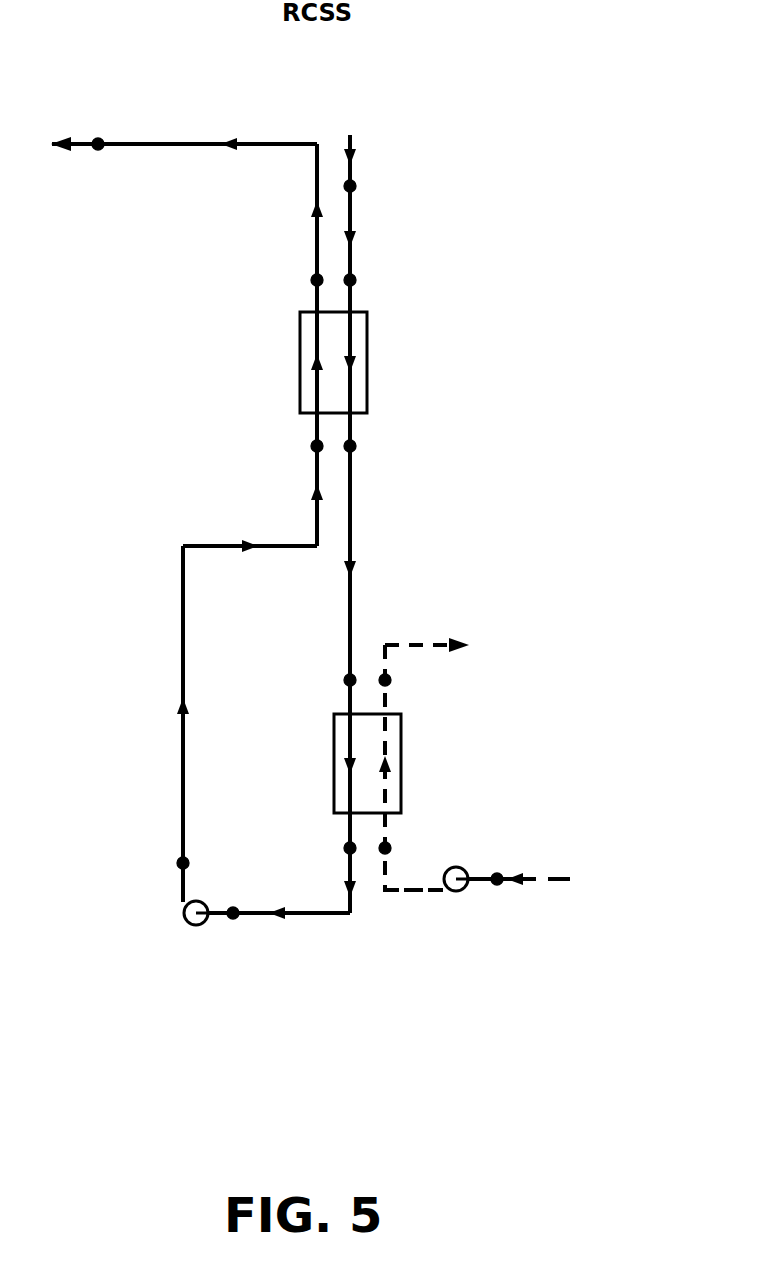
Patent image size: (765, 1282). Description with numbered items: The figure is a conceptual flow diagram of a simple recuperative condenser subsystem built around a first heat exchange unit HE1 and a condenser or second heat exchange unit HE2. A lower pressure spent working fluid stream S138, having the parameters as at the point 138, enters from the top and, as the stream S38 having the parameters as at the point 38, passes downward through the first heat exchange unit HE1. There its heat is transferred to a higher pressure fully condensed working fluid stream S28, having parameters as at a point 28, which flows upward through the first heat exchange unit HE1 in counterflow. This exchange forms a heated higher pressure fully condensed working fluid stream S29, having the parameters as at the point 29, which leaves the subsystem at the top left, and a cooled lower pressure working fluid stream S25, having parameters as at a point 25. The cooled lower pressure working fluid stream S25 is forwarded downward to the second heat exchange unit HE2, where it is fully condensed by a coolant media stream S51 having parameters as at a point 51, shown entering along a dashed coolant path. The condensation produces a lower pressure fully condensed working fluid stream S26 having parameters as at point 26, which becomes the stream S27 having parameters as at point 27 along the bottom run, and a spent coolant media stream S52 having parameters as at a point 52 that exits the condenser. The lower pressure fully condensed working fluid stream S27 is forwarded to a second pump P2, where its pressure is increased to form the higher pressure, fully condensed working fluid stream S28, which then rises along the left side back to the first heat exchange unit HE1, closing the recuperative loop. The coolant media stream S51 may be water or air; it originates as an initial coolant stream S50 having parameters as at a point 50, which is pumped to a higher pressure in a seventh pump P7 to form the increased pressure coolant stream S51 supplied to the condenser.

The point 29 is at (204, 202).
The point 138 is at (374, 187).
The point 38 is at (367, 281).
The point 28 is at (235, 655).
The point 25 is at (352, 564).
The point 52 is at (400, 681).
The point 26 is at (335, 849).
The point 51 is at (400, 849).
The point 50 is at (499, 896).
The point 27 is at (236, 934).
The first heat exchange unit HE1 is at (359, 362).
The second heat exchange unit HE2 is at (392, 763).
The second pump P2 is at (177, 913).
The seven pump P7 is at (455, 865).
The heated higher pressure fully condensed working fluid stream S29 is at (150, 146).
The lower pressure spent working fluid stream S138 is at (352, 207).
The lower pressure spent working fluid stream S38 is at (357, 296).
The higher pressure fully condensed working fluid stream S28 is at (310, 430).
The cooled lower pressure working fluid stream S25 is at (357, 430).
The spent coolant media stream S52 is at (427, 645).
The lower pressure fully condensed working fluid stream S26 is at (348, 830).
The lower pressure fully condensed working fluid stream S27 is at (218, 918).
The initial coolant stream S50 is at (477, 878).
The coolant media stream S51 is at (420, 893).